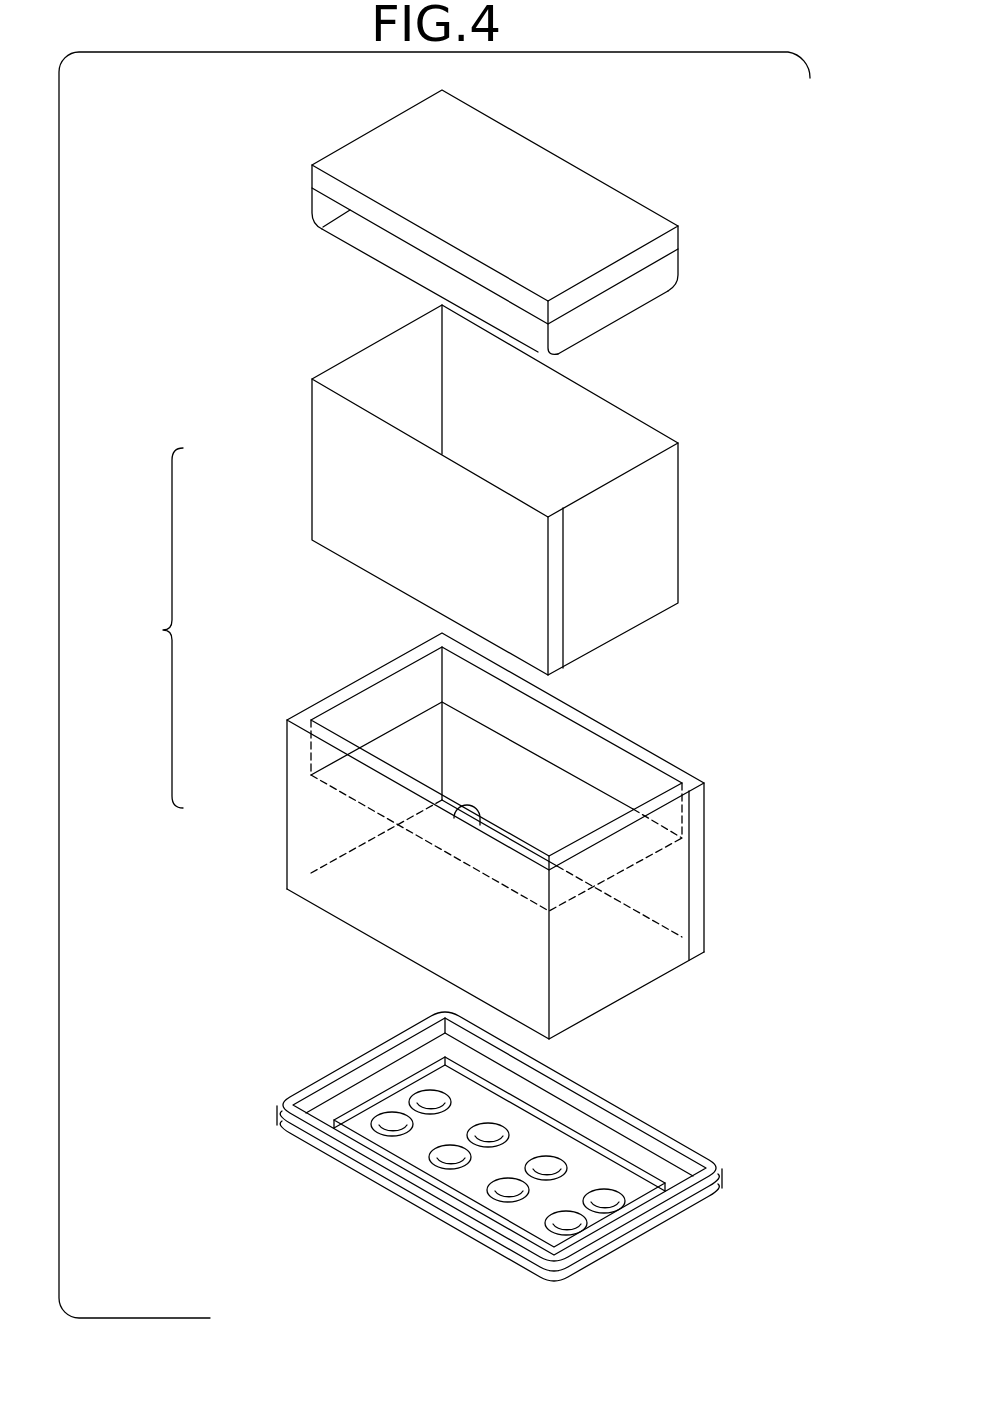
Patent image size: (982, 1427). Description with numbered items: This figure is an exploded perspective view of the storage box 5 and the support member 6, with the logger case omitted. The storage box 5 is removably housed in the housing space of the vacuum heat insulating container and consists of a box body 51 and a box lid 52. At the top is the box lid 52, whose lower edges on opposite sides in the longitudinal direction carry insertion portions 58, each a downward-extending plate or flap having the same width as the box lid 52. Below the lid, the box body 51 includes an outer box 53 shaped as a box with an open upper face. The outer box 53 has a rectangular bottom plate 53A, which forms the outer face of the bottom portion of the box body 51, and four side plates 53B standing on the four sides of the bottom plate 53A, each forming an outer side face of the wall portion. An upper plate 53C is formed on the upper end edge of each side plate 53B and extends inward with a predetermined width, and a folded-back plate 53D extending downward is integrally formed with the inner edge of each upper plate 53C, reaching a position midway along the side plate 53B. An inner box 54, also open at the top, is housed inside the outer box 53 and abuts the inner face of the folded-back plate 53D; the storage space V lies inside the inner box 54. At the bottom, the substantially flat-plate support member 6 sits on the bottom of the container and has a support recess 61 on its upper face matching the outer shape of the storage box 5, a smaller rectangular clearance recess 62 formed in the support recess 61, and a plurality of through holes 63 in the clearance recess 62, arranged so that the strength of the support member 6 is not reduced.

The storage box 5 is at (158, 361).
The box lid 52 is at (310, 166).
The insertion portion 58 is at (320, 209).
The inner box 54 is at (337, 498).
The storage space V is at (558, 450).
The box body 51 is at (156, 628).
The outer box 53 is at (275, 795).
The bottom plate 53A is at (628, 958).
The side plate 53B is at (404, 745).
The upper plate 53C is at (375, 684).
The folded-back plate 53D is at (354, 728).
The support member 6 is at (273, 1131).
The support recess 61 is at (342, 1107).
The clearance recess 62 is at (528, 1220).
The through hole 63 is at (433, 1098).